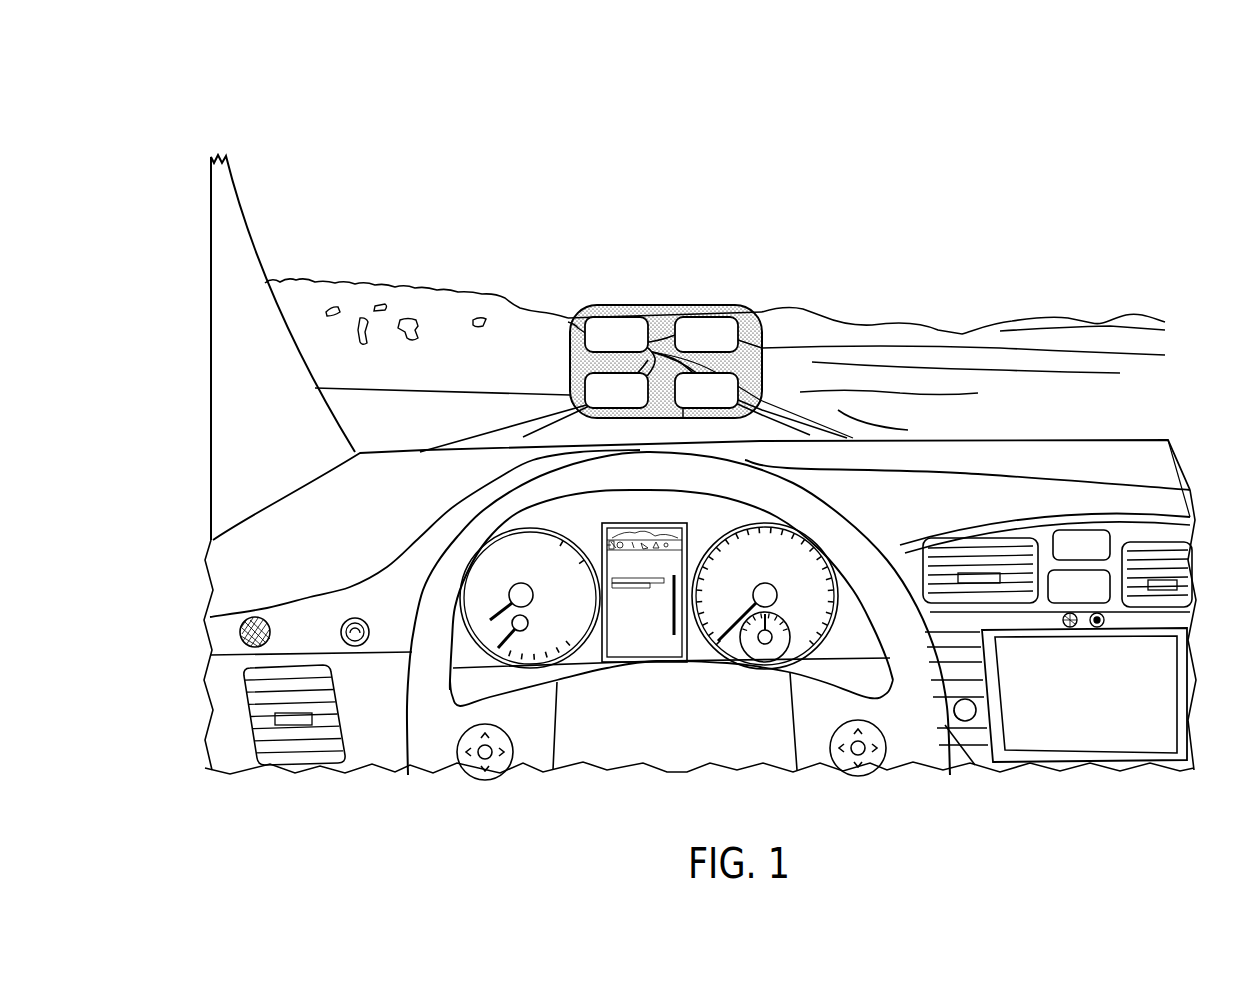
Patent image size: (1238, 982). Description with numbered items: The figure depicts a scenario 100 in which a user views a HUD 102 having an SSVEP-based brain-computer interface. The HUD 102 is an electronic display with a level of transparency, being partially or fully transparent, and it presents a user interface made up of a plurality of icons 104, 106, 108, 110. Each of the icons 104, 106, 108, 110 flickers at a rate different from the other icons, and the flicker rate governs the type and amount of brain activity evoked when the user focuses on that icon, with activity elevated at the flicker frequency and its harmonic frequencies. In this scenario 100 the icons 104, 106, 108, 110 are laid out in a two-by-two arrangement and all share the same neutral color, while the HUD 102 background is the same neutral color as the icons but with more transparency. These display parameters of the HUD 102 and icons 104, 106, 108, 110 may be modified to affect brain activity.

The scenario 100 is at (197, 120).
The HUD 102 is at (681, 306).
The icon 104 is at (639, 348).
The icon 106 is at (729, 348).
The icon 108 is at (729, 404).
The icon 110 is at (639, 404).